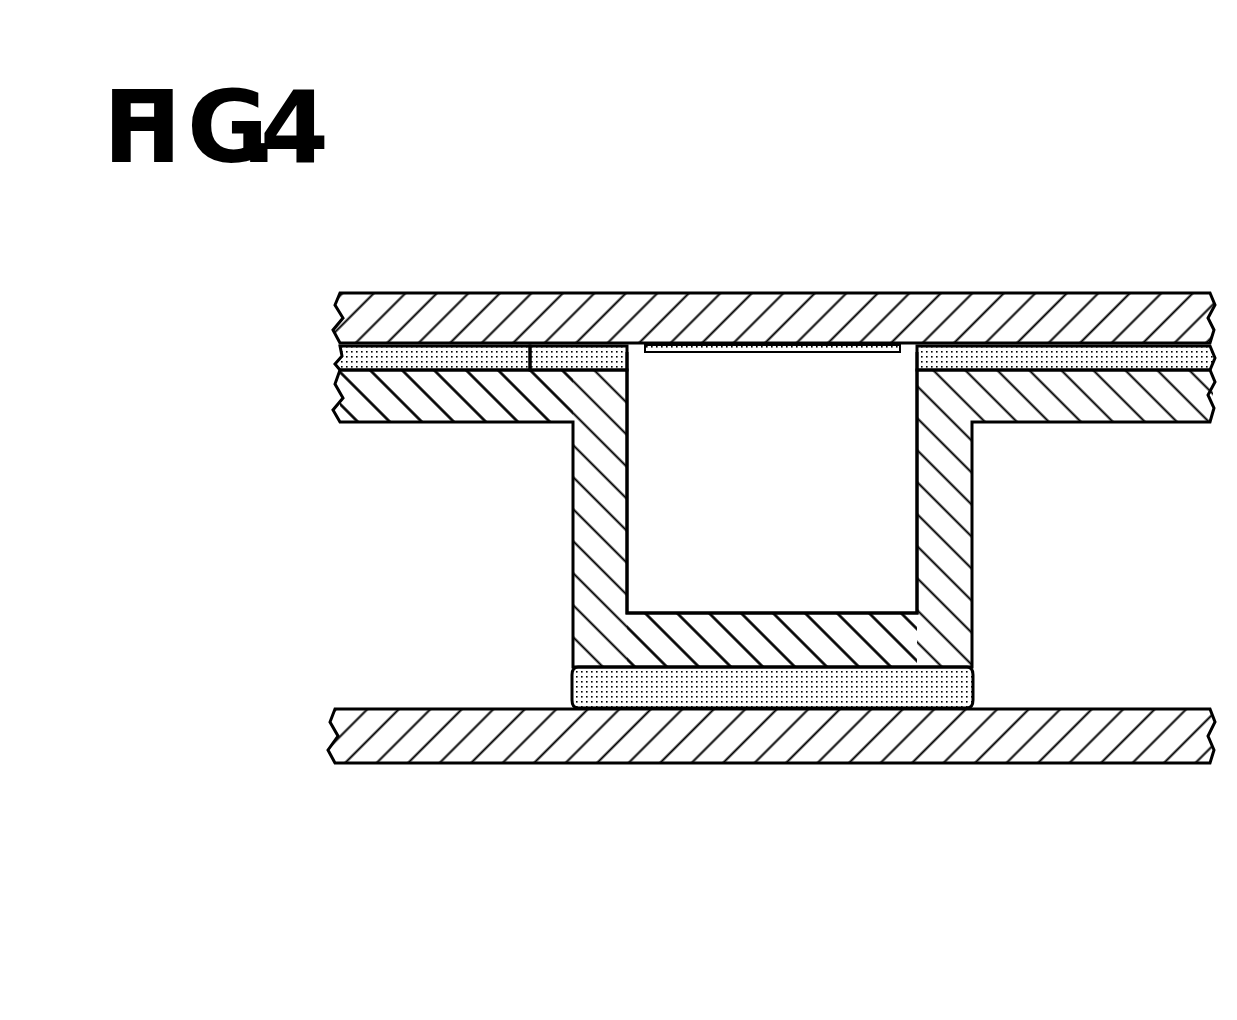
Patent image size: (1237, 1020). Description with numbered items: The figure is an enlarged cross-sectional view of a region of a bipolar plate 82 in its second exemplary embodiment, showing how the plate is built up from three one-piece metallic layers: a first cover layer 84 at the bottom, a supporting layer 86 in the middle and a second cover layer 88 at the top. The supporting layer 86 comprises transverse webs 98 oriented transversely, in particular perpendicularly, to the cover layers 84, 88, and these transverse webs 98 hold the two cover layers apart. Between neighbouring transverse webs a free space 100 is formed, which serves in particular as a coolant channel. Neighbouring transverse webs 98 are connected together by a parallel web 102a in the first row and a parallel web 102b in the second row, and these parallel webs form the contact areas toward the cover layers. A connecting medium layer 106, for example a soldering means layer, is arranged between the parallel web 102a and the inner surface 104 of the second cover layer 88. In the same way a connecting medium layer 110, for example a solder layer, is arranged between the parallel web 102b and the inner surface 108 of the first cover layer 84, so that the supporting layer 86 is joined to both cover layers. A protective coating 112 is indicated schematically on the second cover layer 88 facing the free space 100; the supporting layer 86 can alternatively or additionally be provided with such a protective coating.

The bipolar plate 82 is at (1150, 225).
The first cover layer 84 is at (727, 742).
The supporting layer 86 is at (538, 524).
The second cover layer 88 is at (645, 317).
The transverse web 98 is at (610, 482).
The free space 100 is at (877, 405).
The parallel web 102a is at (397, 397).
The parallel web 102b is at (793, 627).
The inner surface 104 is at (530, 355).
The connecting medium layer 106 is at (404, 356).
The inner surface 108 is at (415, 709).
The connecting medium layer 110 is at (967, 685).
The protective coating 112 is at (753, 348).